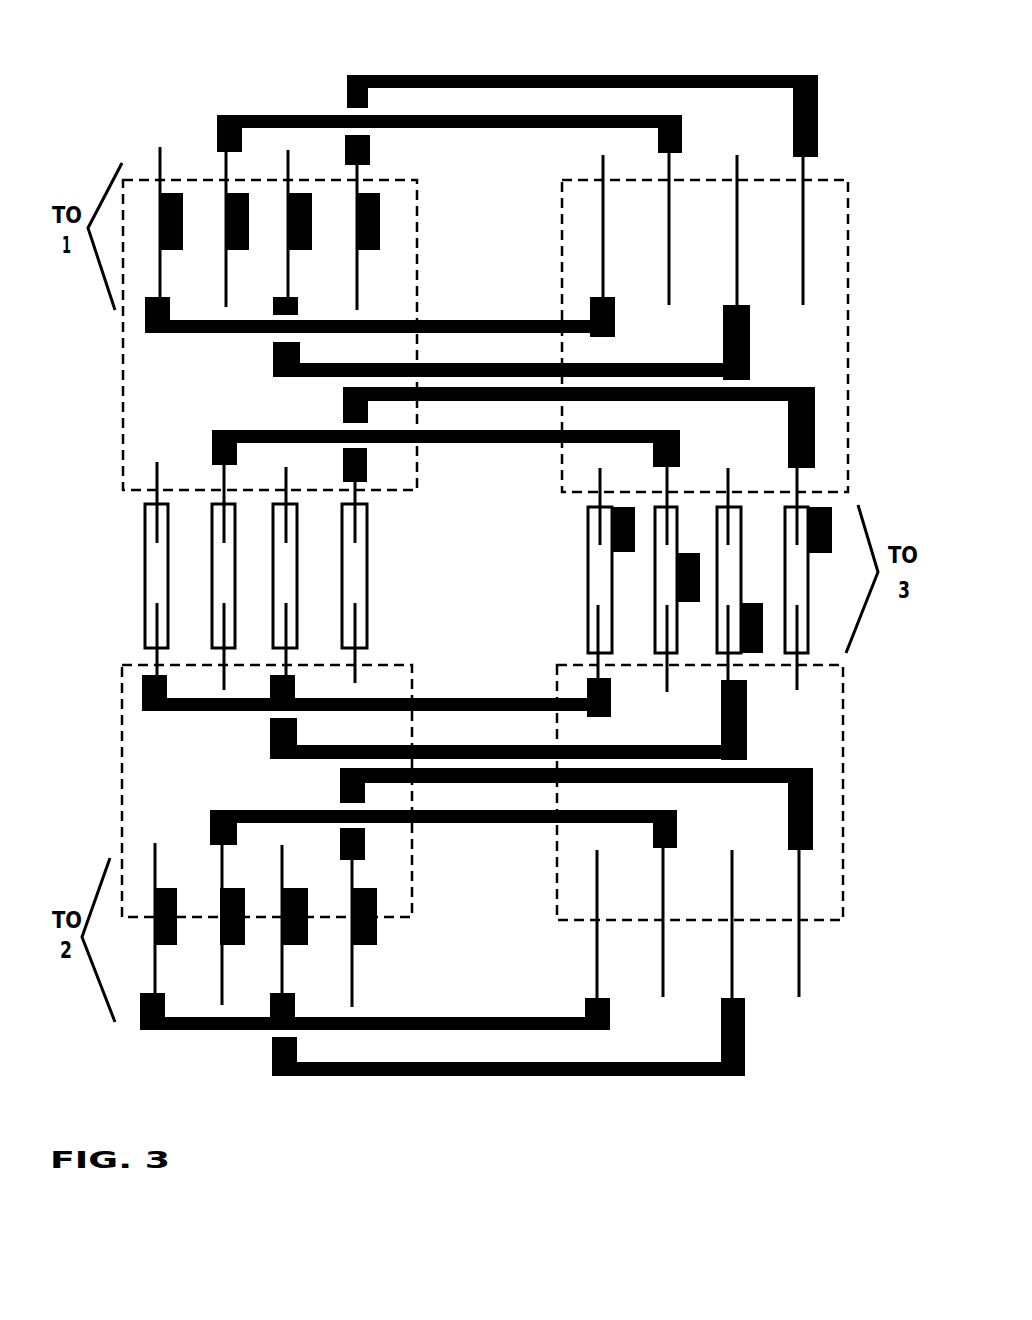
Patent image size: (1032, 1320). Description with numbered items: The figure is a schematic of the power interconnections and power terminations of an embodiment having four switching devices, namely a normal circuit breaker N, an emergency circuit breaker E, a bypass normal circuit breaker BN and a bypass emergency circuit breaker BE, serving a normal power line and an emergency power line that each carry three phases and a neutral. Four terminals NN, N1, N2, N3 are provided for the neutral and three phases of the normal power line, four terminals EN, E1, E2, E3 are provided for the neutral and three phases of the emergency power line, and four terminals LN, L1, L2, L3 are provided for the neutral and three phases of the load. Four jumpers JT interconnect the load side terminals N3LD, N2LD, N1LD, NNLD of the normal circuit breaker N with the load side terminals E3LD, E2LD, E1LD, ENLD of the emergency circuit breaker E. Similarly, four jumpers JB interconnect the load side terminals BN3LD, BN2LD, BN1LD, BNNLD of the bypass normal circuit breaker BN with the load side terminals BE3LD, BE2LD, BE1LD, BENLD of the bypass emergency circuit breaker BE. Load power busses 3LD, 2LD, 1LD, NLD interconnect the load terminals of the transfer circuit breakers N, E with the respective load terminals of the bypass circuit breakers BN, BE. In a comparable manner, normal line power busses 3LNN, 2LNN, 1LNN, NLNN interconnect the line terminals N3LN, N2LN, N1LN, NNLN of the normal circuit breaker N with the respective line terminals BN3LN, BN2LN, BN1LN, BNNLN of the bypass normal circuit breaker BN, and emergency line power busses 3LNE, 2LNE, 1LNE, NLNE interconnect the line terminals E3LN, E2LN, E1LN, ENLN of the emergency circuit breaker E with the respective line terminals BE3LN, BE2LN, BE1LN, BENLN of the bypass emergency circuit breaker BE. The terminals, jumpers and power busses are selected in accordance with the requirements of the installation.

The normal line power bus NLNN is at (422, 73).
The normal line power bus 2LNN is at (452, 115).
The normal line power bus 3LNN is at (432, 320).
The normal line power bus 1LNN is at (462, 363).
The line terminal of bypass normal circuit breaker BN1LN is at (288, 178).
The line terminal of bypass normal circuit breaker BN2LN is at (225, 175).
The line terminal of bypass normal circuit breaker BN3LN is at (160, 177).
The line terminal of bypass normal circuit breaker BNNLN is at (360, 180).
The line terminal of normal circuit breaker N1LN is at (737, 177).
The line terminal of normal circuit breaker N2LN is at (668, 175).
The line terminal of normal circuit breaker N3LN is at (603, 208).
The line terminal of normal circuit breaker NNLN is at (803, 208).
The terminal N1 is at (288, 233).
The terminal N2 is at (225, 228).
The terminal N3 is at (153, 218).
The terminal NN is at (355, 250).
The bypass normal circuit breaker BN is at (417, 233).
The normal circuit breaker N is at (848, 277).
The load power bus NLD is at (538, 402).
The load power bus 2LD is at (488, 445).
The load power bus 3LD is at (458, 700).
The load power bus 1LD is at (442, 745).
The load side terminal of bypass normal circuit breaker BN1LD is at (327, 463).
The load side terminal of bypass normal circuit breaker BN2LD is at (253, 445).
The load side terminal of bypass normal circuit breaker BN3LD is at (185, 455).
The load side terminal of bypass normal circuit breaker BNNLD is at (357, 495).
The load side terminal of normal circuit breaker N1LD is at (728, 480).
The load side terminal of normal circuit breaker N2LD is at (668, 482).
The load side terminal of normal circuit breaker N3LD is at (595, 493).
The load side terminal of normal circuit breaker NNLD is at (799, 487).
The jumper JB is at (148, 568).
The jumper JT is at (720, 557).
The terminal L1 is at (743, 627).
The terminal L2 is at (678, 572).
The terminal L3 is at (622, 555).
The terminal LN is at (820, 557).
The load side terminal of bypass emergency circuit breaker BE1LD is at (287, 655).
The load side terminal of bypass emergency circuit breaker BE2LD is at (223, 672).
The load side terminal of bypass emergency circuit breaker BE3LD is at (148, 660).
The load side terminal of bypass emergency circuit breaker BENLD is at (362, 655).
The load side terminal of emergency circuit breaker E1LD is at (728, 670).
The load side terminal of emergency circuit breaker E2LD is at (690, 688).
The load side terminal of emergency circuit breaker E3LD is at (600, 668).
The load side terminal of emergency circuit breaker ENLD is at (797, 672).
The bypass emergency circuit breaker BE is at (412, 683).
The emergency circuit breaker E is at (843, 823).
The emergency line power bus NLNE is at (535, 783).
The emergency line power bus 2LNE is at (493, 823).
The emergency line power bus 3LNE is at (490, 1035).
The emergency line power bus 1LNE is at (583, 1080).
The terminal E1 is at (280, 937).
The terminal E2 is at (218, 938).
The terminal E3 is at (177, 888).
The terminal EN is at (348, 937).
The line terminal of bypass emergency circuit breaker BE1LN is at (280, 980).
The line terminal of bypass emergency circuit breaker BE2LN is at (222, 978).
The line terminal of bypass emergency circuit breaker BE3LN is at (153, 977).
The line terminal of bypass emergency circuit breaker BENLN is at (355, 973).
The line terminal of emergency circuit breaker E1LN is at (732, 960).
The line terminal of emergency circuit breaker E2LN is at (663, 940).
The line terminal of emergency circuit breaker E3LN is at (597, 950).
The line terminal of emergency circuit breaker ENLN is at (799, 953).